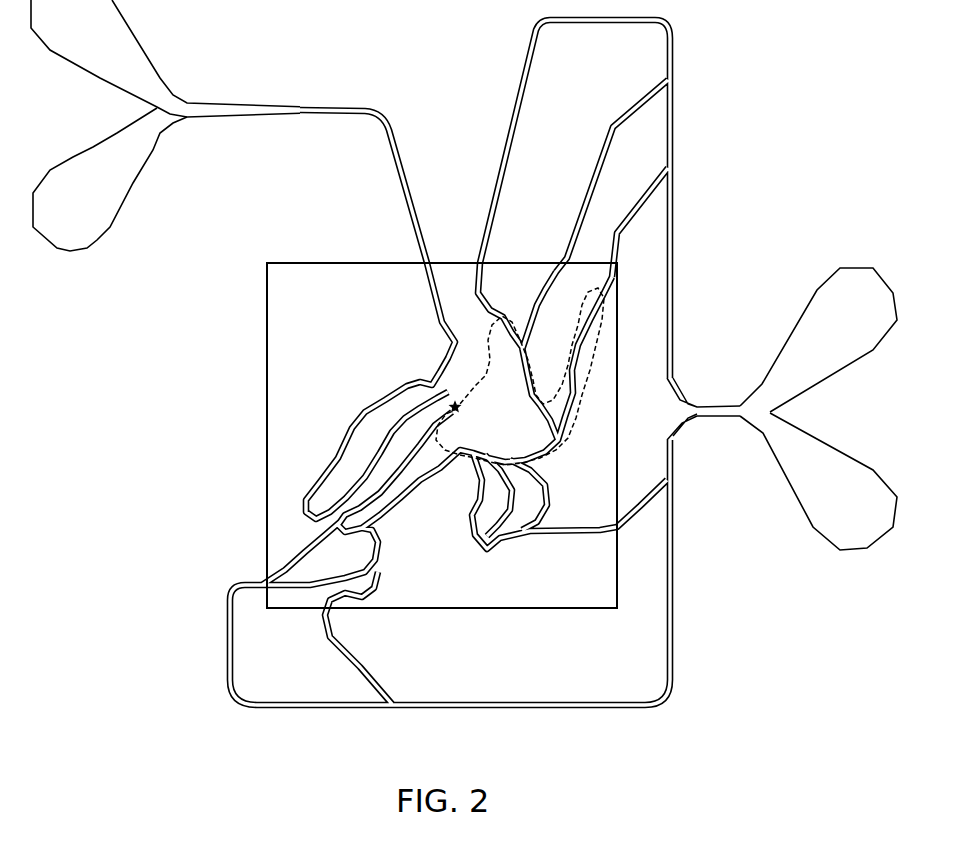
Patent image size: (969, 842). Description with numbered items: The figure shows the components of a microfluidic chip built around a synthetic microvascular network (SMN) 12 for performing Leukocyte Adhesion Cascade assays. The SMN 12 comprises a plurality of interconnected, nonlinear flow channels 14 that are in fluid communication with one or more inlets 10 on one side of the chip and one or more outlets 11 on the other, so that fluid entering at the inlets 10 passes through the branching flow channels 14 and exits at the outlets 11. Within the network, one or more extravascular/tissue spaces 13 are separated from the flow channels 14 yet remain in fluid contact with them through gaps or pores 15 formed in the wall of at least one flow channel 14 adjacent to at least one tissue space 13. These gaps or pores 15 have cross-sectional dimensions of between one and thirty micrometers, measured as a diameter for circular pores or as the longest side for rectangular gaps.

The inlet 10 is at (126, 149).
The outlet 11 is at (809, 470).
The synthetic microvascular network 12 is at (259, 449).
The extravascular/tissue space 13 is at (497, 423).
The flow channel 14 is at (553, 452).
The gap or pore 15 is at (451, 398).